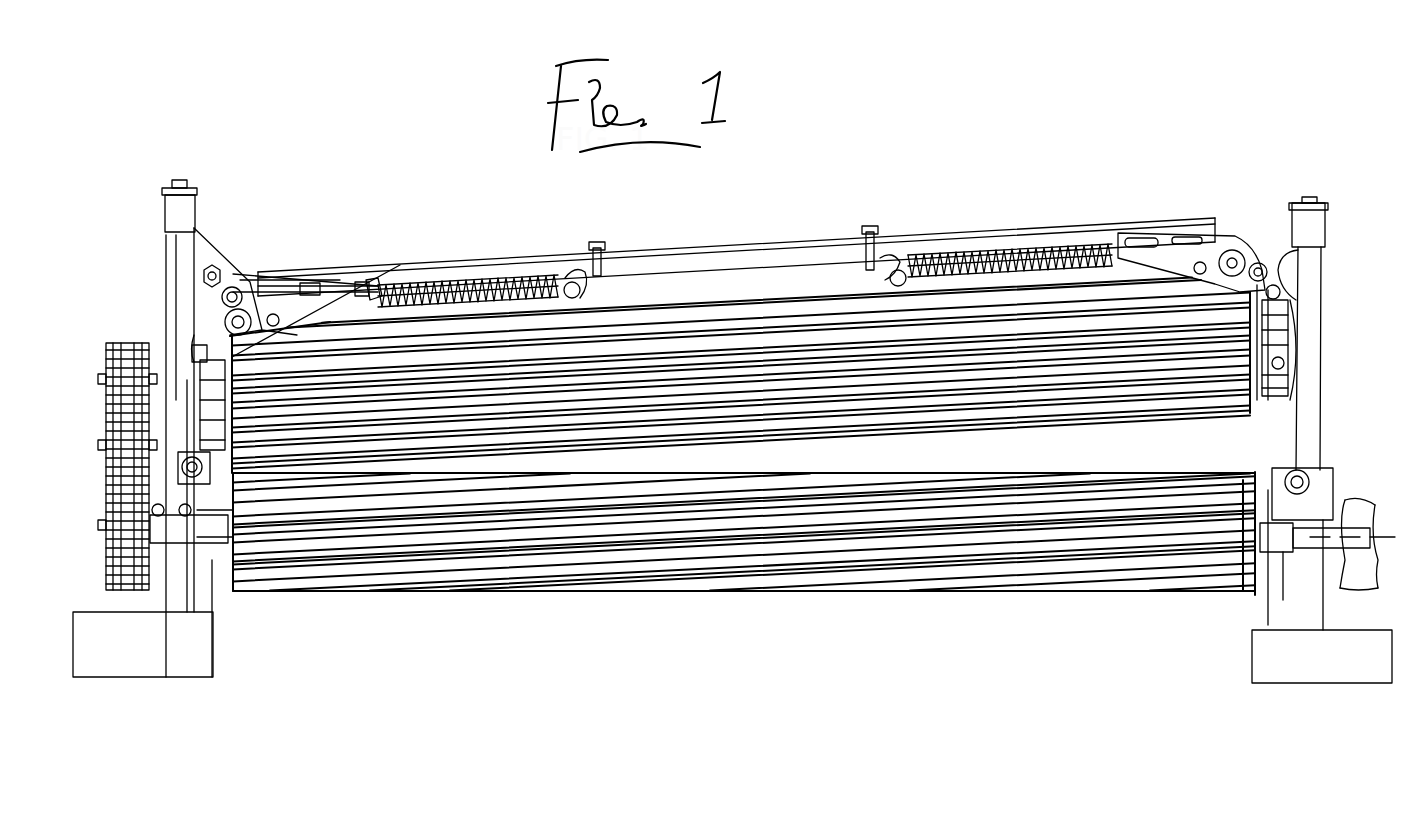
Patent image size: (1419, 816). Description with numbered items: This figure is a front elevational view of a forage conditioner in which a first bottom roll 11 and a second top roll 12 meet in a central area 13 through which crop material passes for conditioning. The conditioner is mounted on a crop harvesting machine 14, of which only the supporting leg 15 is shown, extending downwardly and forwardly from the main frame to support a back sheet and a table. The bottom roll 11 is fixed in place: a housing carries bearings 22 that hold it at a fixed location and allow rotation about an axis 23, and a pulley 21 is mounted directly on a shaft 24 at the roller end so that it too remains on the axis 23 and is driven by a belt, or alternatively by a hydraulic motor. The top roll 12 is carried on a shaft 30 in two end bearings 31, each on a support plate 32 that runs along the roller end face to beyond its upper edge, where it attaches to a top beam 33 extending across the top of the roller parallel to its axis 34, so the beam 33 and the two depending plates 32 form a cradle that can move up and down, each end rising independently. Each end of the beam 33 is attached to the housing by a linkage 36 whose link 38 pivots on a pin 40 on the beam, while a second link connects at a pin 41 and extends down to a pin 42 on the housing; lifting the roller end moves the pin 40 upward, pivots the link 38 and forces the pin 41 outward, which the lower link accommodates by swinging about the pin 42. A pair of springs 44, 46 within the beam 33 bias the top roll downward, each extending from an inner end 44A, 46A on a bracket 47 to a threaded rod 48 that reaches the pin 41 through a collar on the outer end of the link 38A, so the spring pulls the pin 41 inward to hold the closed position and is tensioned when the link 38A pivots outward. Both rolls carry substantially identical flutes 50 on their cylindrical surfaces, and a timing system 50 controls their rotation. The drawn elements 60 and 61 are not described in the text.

The first bottom roll 11 is at (642, 547).
The second top roll 12 is at (635, 360).
The central area 13 is at (765, 453).
The crop harvesting machine 14 is at (315, 640).
The supporting leg 15 is at (120, 663).
The pulley 21 is at (1342, 520).
The bearings 22 is at (172, 560).
The axis 23 is at (1393, 537).
The shaft 24 is at (1369, 564).
The shaft 30 is at (1220, 240).
The end bearings 31 is at (1266, 272).
The support plate 32 is at (1270, 400).
The top beam 33 is at (817, 263).
The axis 34 is at (1373, 345).
The linkage 36 is at (247, 246).
The link 38 is at (197, 248).
The link 38A is at (233, 268).
The pin 40 is at (312, 280).
The pin 41 is at (204, 276).
The pin 42 is at (182, 395).
The spring 44 is at (468, 283).
The inner end 44A is at (568, 288).
The spring 46 is at (997, 247).
The inner end 46A is at (900, 290).
The bracket 47 is at (600, 255).
The threaded rod 48 is at (380, 282).
The flutes 50 is at (102, 332).
The drive sprocket 60 is at (106, 520).
The drive chain 61 is at (104, 410).